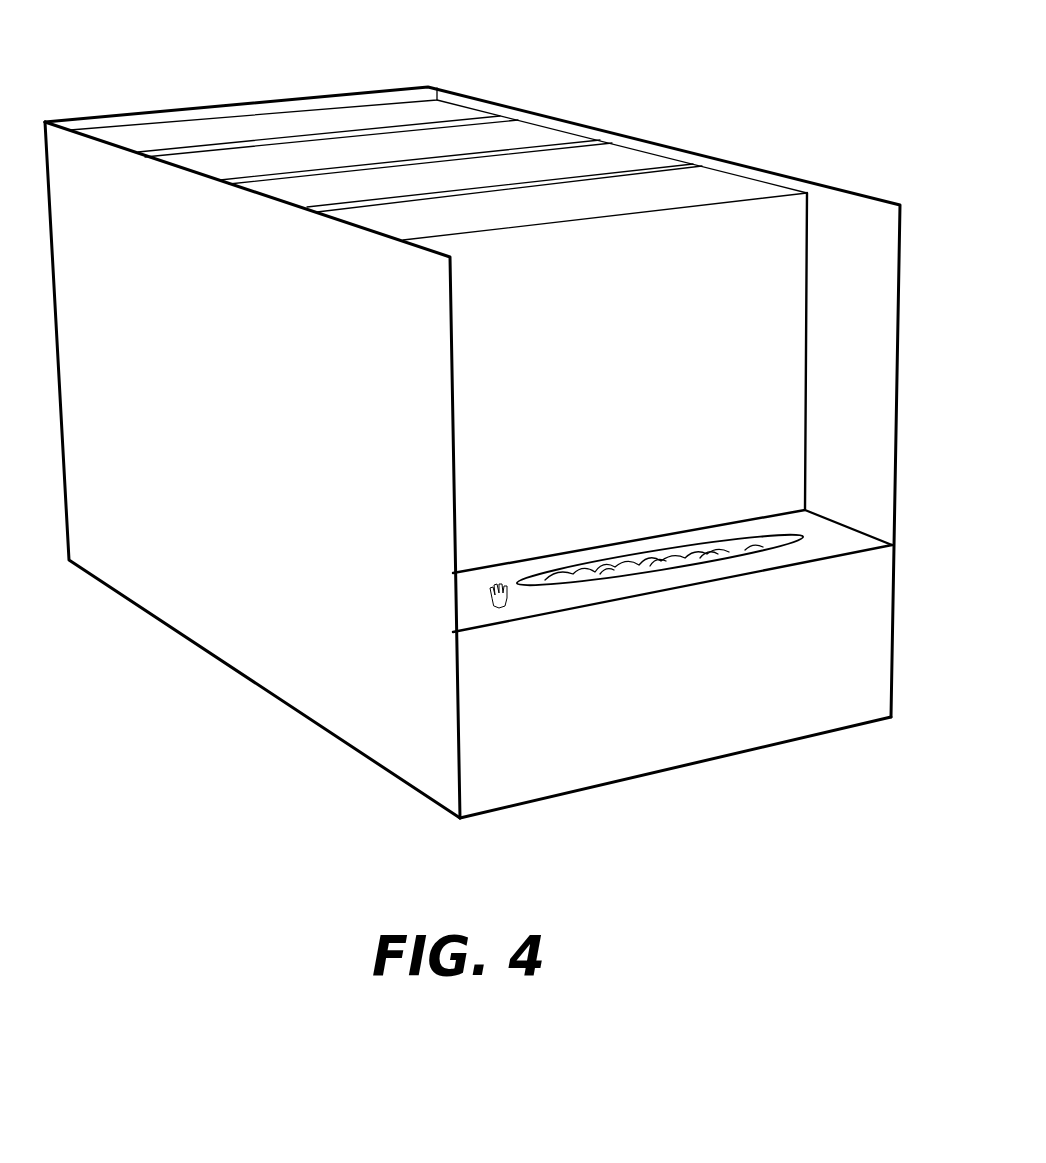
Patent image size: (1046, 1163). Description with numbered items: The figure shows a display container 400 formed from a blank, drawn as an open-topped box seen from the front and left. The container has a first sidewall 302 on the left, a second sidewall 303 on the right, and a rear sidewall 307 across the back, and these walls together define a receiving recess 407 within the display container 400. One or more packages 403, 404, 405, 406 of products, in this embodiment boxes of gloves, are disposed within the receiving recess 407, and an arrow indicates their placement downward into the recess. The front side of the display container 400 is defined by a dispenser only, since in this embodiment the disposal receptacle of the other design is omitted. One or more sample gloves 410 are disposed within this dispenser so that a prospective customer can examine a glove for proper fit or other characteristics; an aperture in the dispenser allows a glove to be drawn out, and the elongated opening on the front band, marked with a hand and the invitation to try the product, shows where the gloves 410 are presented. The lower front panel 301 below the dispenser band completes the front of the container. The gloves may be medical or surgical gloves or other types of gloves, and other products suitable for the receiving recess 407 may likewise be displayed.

The display container 400 is at (192, 45).
The bottom panel 301 is at (655, 698).
The first sidewall 302 is at (213, 596).
The second sidewall 303 is at (903, 283).
The rear sidewall 307 is at (256, 101).
The package 403 is at (439, 113).
The package 404 is at (530, 137).
The package 405 is at (628, 160).
The package 406 is at (751, 190).
The receiving recess 407 is at (838, 240).
The sample gloves 410 is at (666, 568).